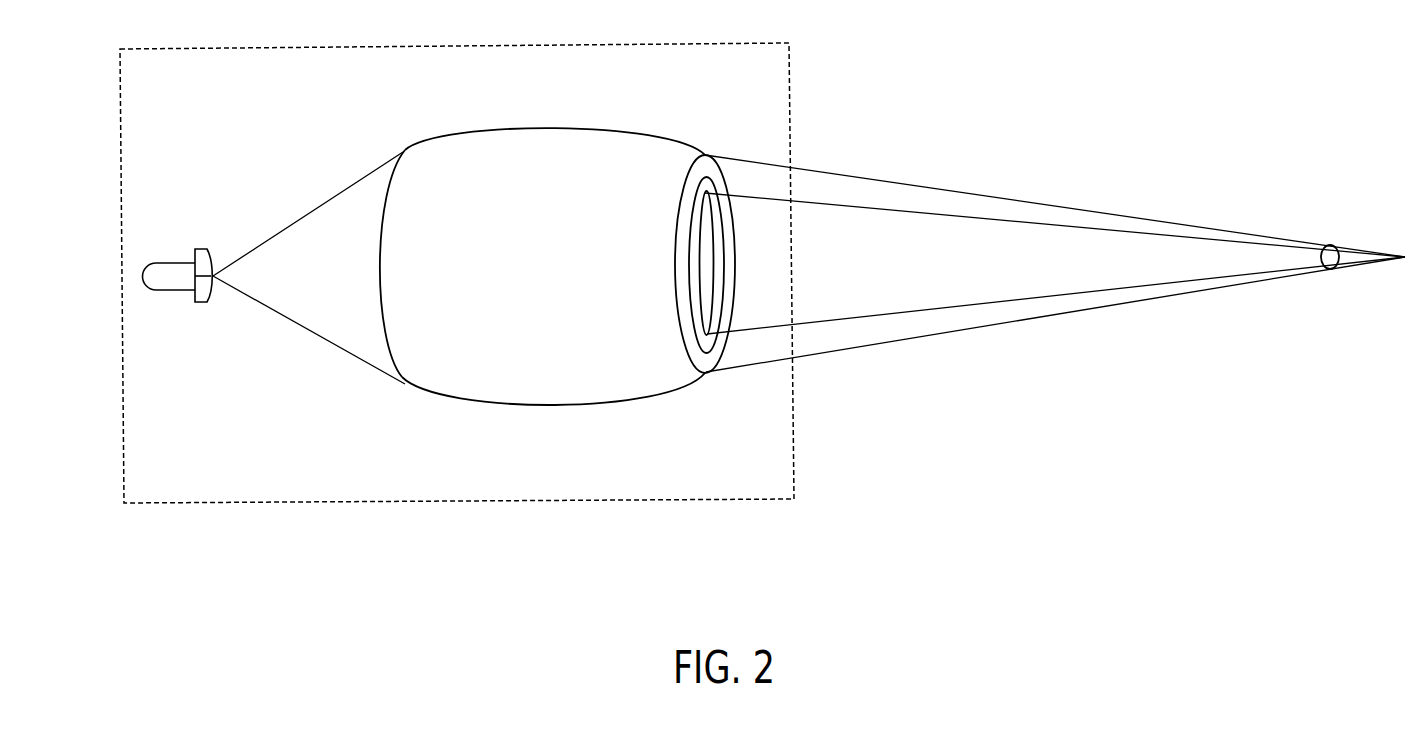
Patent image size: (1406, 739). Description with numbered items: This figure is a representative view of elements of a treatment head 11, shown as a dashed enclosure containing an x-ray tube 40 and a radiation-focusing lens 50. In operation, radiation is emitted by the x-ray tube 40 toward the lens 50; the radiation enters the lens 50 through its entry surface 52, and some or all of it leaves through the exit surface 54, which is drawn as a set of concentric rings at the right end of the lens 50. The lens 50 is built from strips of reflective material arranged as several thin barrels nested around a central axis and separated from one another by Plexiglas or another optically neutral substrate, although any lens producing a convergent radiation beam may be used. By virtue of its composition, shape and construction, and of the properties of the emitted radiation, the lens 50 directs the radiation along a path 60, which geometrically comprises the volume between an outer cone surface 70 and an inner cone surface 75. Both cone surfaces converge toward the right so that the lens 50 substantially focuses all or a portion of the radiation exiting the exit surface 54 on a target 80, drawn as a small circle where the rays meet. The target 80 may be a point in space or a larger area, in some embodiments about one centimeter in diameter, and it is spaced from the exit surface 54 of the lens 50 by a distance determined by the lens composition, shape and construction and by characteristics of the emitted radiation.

The treatment head 11 is at (653, 43).
The x-ray tube 40 is at (198, 248).
The lens 50 is at (578, 127).
The entry surface 52 is at (385, 192).
The exit surface 54 is at (713, 162).
The path 60 is at (867, 195).
The outer cone surface 70 is at (945, 188).
The inner cone surface 75 is at (1038, 223).
The target 80 is at (1330, 245).